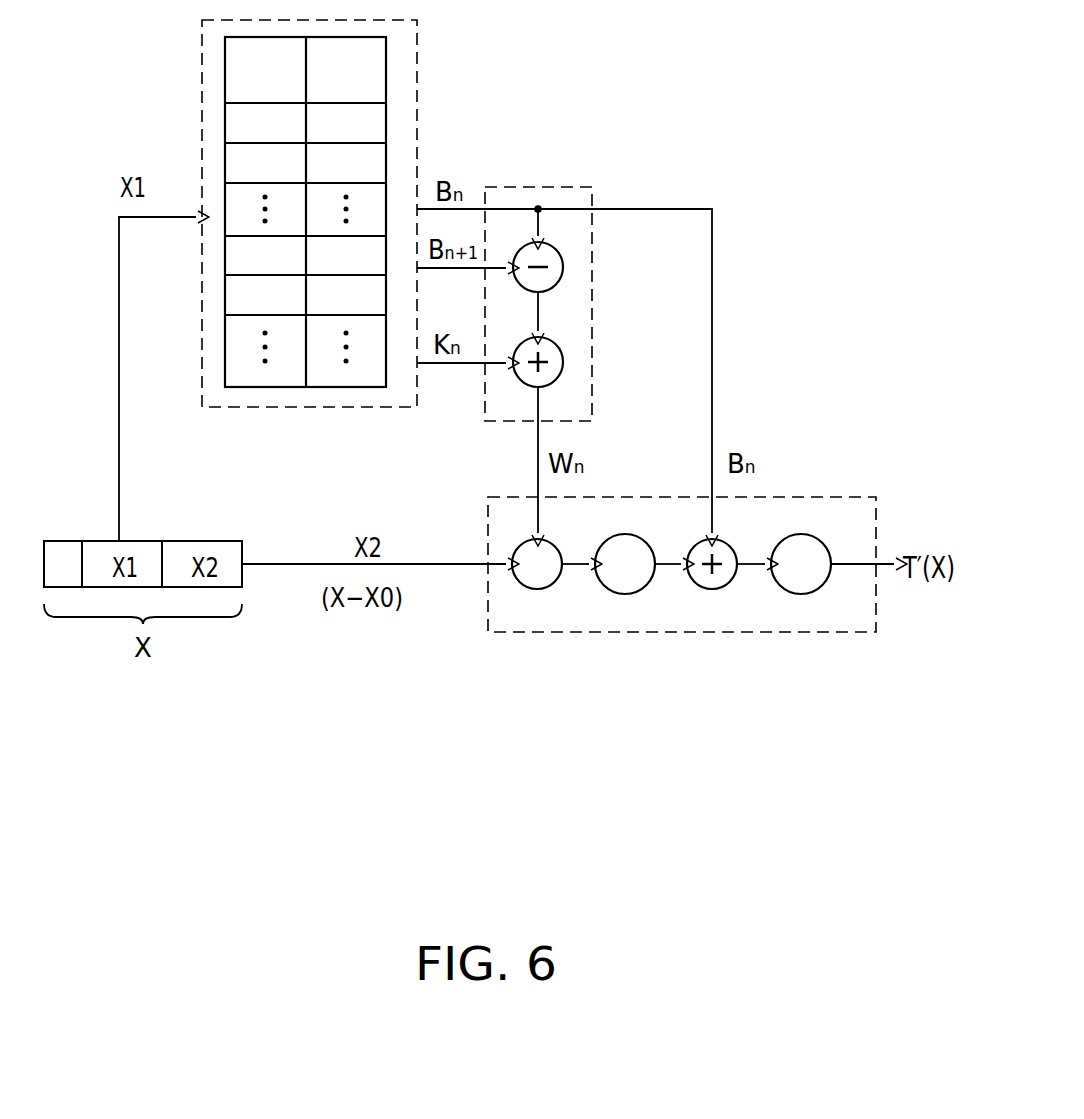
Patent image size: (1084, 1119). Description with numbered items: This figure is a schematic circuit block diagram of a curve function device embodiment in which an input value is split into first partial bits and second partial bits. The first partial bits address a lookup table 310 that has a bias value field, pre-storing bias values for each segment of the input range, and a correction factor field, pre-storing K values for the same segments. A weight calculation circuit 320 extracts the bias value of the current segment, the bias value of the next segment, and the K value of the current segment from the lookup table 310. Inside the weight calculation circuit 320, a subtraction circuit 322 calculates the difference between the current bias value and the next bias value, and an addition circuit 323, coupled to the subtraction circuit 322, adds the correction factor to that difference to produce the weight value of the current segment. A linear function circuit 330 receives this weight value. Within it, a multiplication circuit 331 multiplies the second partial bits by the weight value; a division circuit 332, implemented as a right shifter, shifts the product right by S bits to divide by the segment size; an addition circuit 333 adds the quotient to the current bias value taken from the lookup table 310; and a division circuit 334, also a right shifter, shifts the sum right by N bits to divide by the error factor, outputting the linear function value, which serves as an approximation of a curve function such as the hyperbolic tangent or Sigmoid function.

The lookup table 310 is at (417, 97).
The weight calculation circuit 320 is at (572, 280).
The subtraction circuit 322 is at (563, 267).
The addition circuit 323 is at (563, 362).
The linear function circuit 330 is at (682, 613).
The multiplication circuit 331 is at (531, 589).
The division circuit 332 is at (625, 594).
The addition circuit 333 is at (707, 589).
The division circuit 334 is at (799, 594).